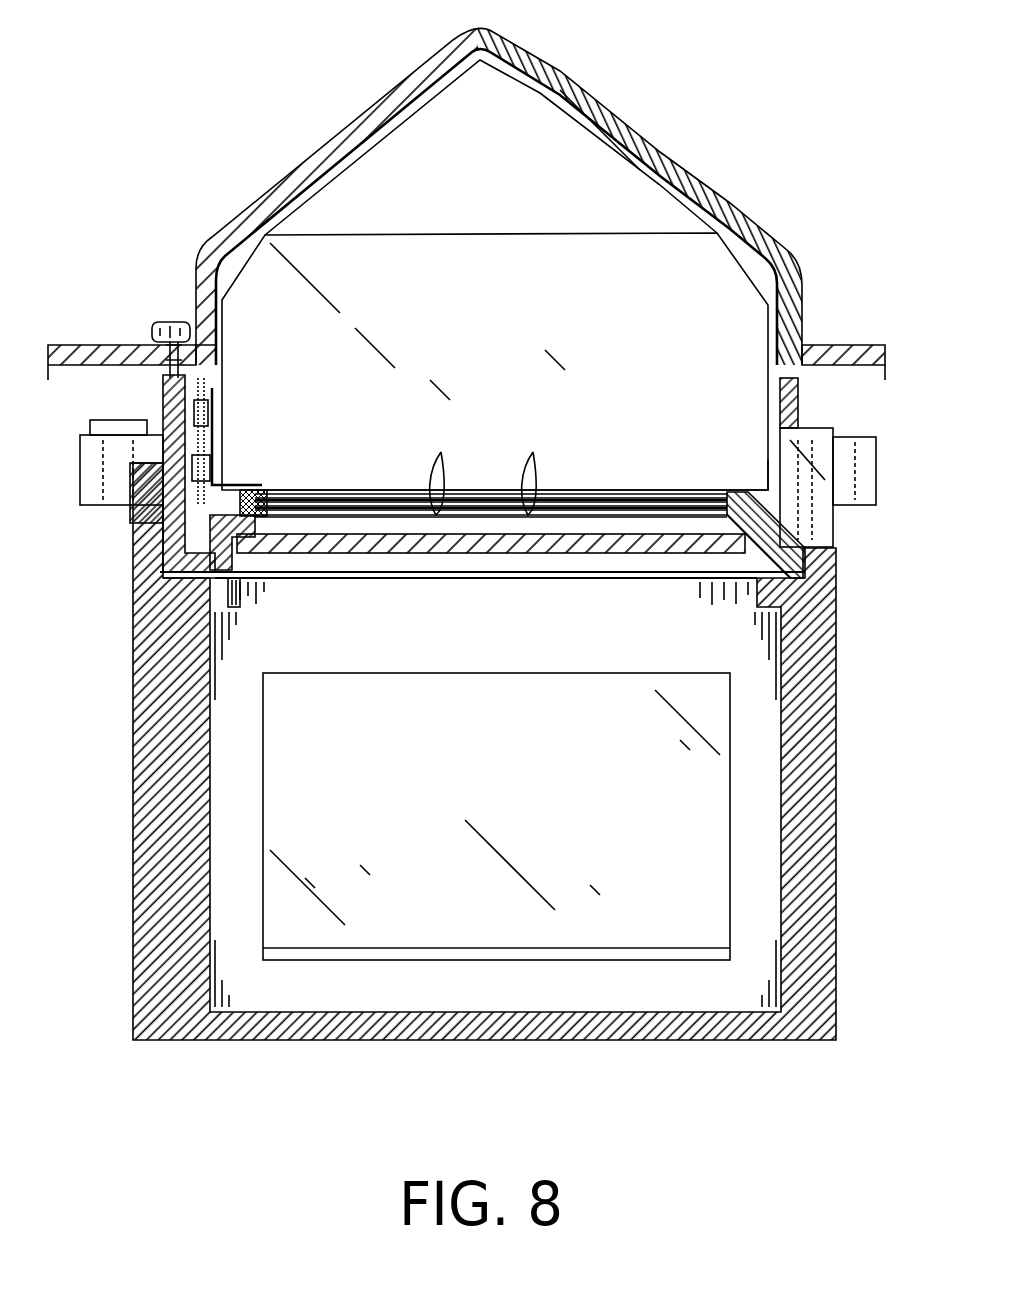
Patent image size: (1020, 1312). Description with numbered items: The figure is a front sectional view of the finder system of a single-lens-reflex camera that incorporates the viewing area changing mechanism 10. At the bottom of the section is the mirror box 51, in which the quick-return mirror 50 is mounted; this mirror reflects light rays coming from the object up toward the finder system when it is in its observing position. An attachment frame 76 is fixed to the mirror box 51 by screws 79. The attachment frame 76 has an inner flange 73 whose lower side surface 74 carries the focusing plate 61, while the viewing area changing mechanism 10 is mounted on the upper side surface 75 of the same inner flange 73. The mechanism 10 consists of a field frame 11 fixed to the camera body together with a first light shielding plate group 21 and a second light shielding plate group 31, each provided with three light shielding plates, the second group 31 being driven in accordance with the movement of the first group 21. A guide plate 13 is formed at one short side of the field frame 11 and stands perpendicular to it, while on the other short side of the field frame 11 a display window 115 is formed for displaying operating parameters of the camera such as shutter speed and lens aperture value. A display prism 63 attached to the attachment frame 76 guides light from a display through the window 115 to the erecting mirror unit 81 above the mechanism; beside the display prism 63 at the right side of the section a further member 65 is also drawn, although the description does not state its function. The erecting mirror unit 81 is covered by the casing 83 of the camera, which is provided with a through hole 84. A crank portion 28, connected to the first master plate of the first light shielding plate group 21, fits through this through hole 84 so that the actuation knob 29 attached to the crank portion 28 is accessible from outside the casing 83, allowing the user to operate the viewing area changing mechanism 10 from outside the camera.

The viewing area changing mechanism 10 is at (500, 488).
The field frame 11 is at (386, 490).
The guide plate 13 is at (218, 392).
The first light shielding plate group 21 is at (553, 477).
The crank portion 28 is at (205, 357).
The actuation knob 29 is at (173, 325).
The second light shielding plate group 31 is at (459, 477).
The quick-return mirror 50 is at (503, 690).
The mirror box 51 is at (825, 850).
The focusing plate 61 is at (666, 552).
The display prism 63 is at (812, 412).
The wedge member 65 is at (776, 522).
The inner flange 73 is at (262, 512).
The lower side surface 74 is at (229, 535).
The upper side surface 75 is at (250, 490).
The attachment frame 76 is at (163, 567).
The screws 79 is at (88, 432).
The erecting mirror unit 81 is at (572, 135).
The casing 83 is at (730, 212).
The through hole 84 is at (165, 345).
The display window 115 is at (744, 486).